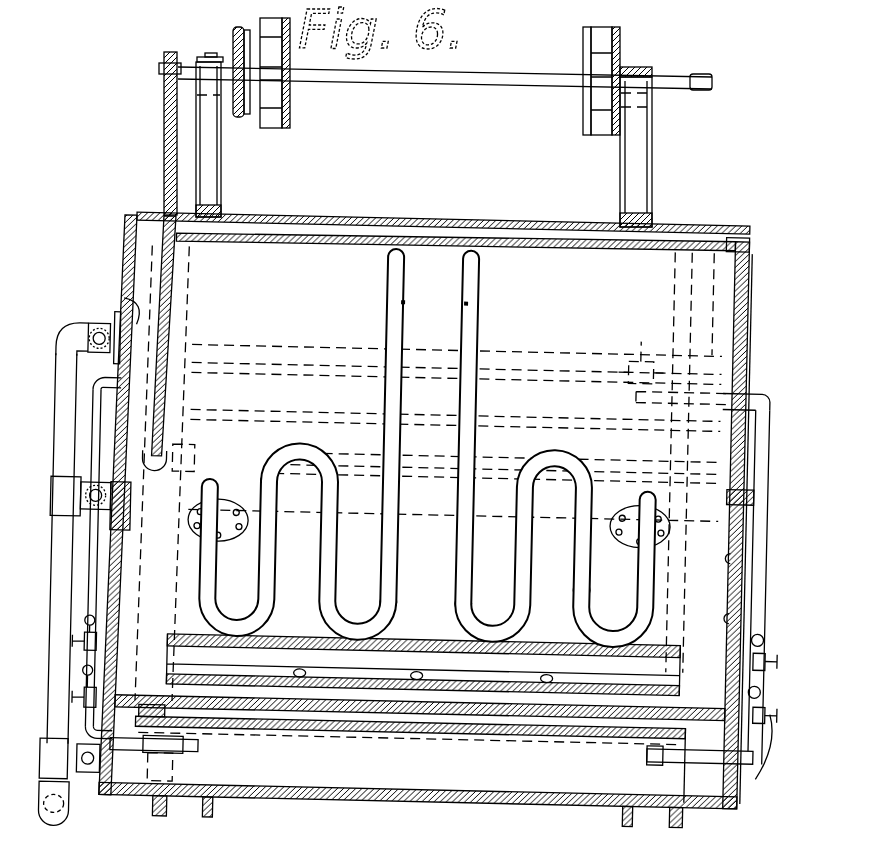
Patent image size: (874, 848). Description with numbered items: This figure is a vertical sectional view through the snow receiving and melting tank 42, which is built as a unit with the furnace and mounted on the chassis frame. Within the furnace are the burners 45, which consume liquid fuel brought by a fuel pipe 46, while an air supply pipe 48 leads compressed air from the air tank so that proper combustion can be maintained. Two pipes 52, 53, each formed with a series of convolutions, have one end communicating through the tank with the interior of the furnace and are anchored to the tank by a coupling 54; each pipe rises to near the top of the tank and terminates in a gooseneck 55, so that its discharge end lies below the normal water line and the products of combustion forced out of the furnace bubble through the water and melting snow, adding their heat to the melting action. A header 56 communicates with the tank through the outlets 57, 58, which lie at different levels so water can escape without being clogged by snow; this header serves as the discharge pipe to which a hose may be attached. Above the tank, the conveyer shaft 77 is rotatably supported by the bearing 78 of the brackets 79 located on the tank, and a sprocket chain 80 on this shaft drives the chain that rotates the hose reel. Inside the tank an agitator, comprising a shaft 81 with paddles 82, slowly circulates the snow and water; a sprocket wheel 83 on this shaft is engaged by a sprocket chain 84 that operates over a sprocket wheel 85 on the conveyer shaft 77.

The snow receiving and melting tank 42 is at (747, 258).
The burners 45 is at (197, 746).
The fuel pipe 46 is at (106, 595).
The air supply pipe 48 is at (97, 413).
The pipe 52 is at (387, 566).
The pipe 53 is at (460, 568).
The coupling 54 is at (224, 536).
The gooseneck 55 is at (462, 281).
The header 56 is at (60, 352).
The outlet 57 is at (125, 297).
The outlet 58 is at (133, 515).
The shaft 77 is at (694, 78).
The bearing 78 is at (217, 54).
The brackets 79 is at (214, 183).
The sprocket chain 80 is at (242, 27).
The shaft 81 is at (748, 382).
The paddles 82 is at (603, 352).
The sprocket wheel 83 is at (176, 463).
The sprocket chain 84 is at (164, 152).
The sprocket wheel 85 is at (177, 62).